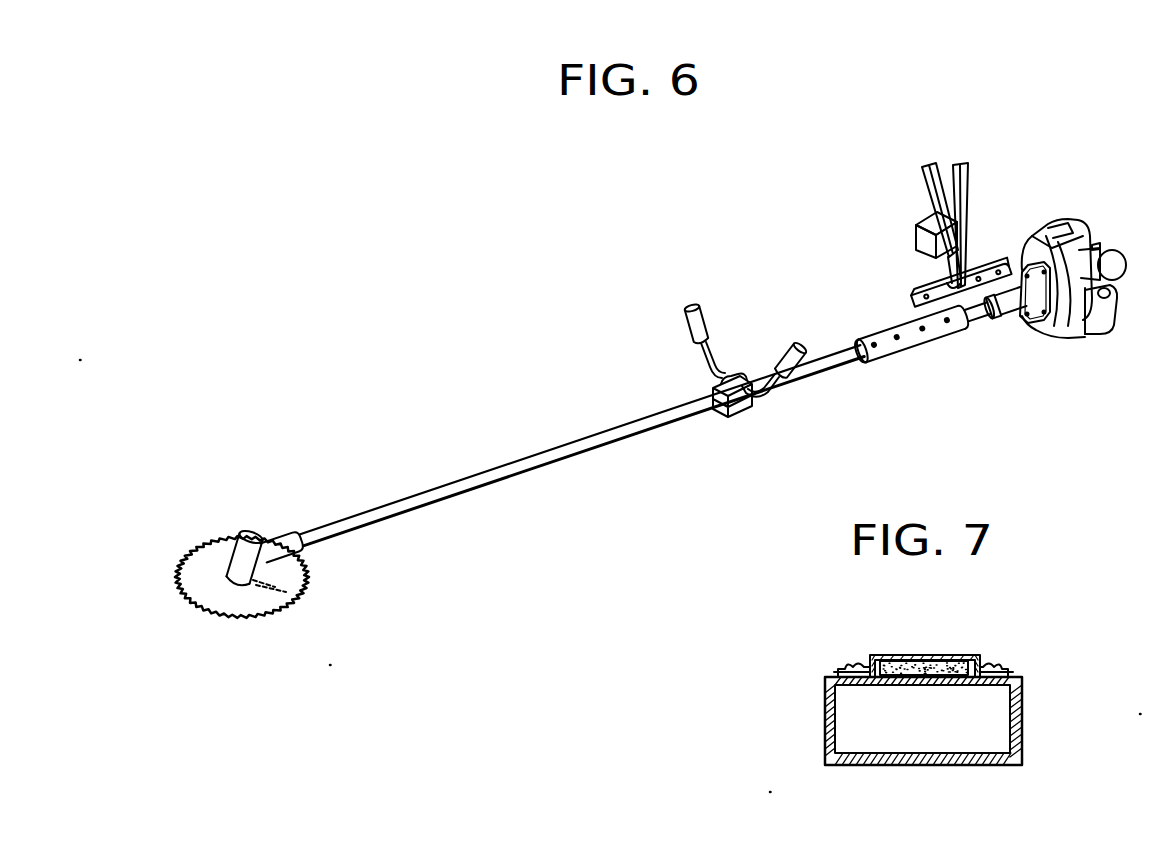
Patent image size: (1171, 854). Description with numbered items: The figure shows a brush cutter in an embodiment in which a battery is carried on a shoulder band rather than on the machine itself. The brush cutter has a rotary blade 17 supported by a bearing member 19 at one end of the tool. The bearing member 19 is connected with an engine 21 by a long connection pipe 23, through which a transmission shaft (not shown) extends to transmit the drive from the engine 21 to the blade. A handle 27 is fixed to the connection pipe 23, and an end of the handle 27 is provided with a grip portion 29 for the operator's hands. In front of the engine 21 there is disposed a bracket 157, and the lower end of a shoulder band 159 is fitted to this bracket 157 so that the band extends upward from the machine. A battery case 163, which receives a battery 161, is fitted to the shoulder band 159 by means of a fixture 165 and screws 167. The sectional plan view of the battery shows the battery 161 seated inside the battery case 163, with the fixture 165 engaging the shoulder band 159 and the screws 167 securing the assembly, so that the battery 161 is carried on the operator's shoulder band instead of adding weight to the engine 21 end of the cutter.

In FIG. 6, the rotary blade 17 is at (292, 588).
In FIG. 6, the bearing member 19 is at (256, 532).
In FIG. 6, the engine 21 is at (1080, 247).
In FIG. 6, the connection pipe 23 is at (562, 445).
In FIG. 6, the handle 27 is at (698, 365).
In FIG. 6, the grip portion 29 is at (704, 327).
In FIG. 6, the bracket 157 is at (928, 285).
In FIG. 6, the shoulder band 159 is at (960, 188).
In FIG. 7, the shoulder band 159 is at (898, 662).
In FIG. 6, the battery 161 is at (926, 238).
In FIG. 7, the battery 161 is at (948, 737).
In FIG. 7, the battery case 163 is at (1022, 715).
In FIG. 7, the fixture 165 is at (905, 657).
In FIG. 7, the screws 167 is at (852, 666).